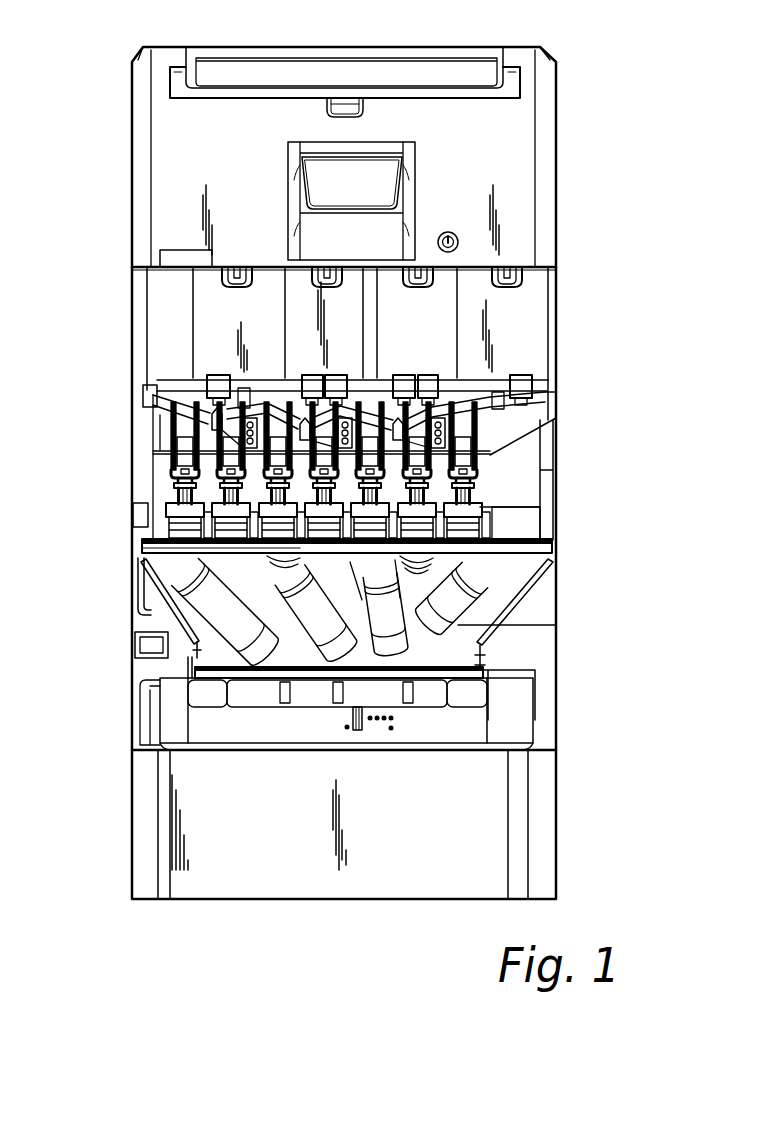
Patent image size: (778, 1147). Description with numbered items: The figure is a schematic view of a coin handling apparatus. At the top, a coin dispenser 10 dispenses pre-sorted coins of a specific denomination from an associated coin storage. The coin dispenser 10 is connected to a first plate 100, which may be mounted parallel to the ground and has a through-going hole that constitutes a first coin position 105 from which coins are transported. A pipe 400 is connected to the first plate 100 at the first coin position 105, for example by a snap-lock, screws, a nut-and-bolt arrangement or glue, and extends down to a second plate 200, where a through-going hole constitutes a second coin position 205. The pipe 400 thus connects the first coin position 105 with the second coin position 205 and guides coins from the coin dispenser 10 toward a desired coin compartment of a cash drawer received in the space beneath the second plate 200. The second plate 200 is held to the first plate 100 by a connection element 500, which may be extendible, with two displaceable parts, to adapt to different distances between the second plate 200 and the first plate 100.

The coin dispenser 10 is at (460, 532).
The first plate 100 is at (552, 548).
The first coin position 105 is at (178, 553).
The pipe 400 is at (207, 590).
The connection element 500 is at (523, 592).
The second plate 200 is at (493, 670).
The second coin position 205 is at (300, 673).